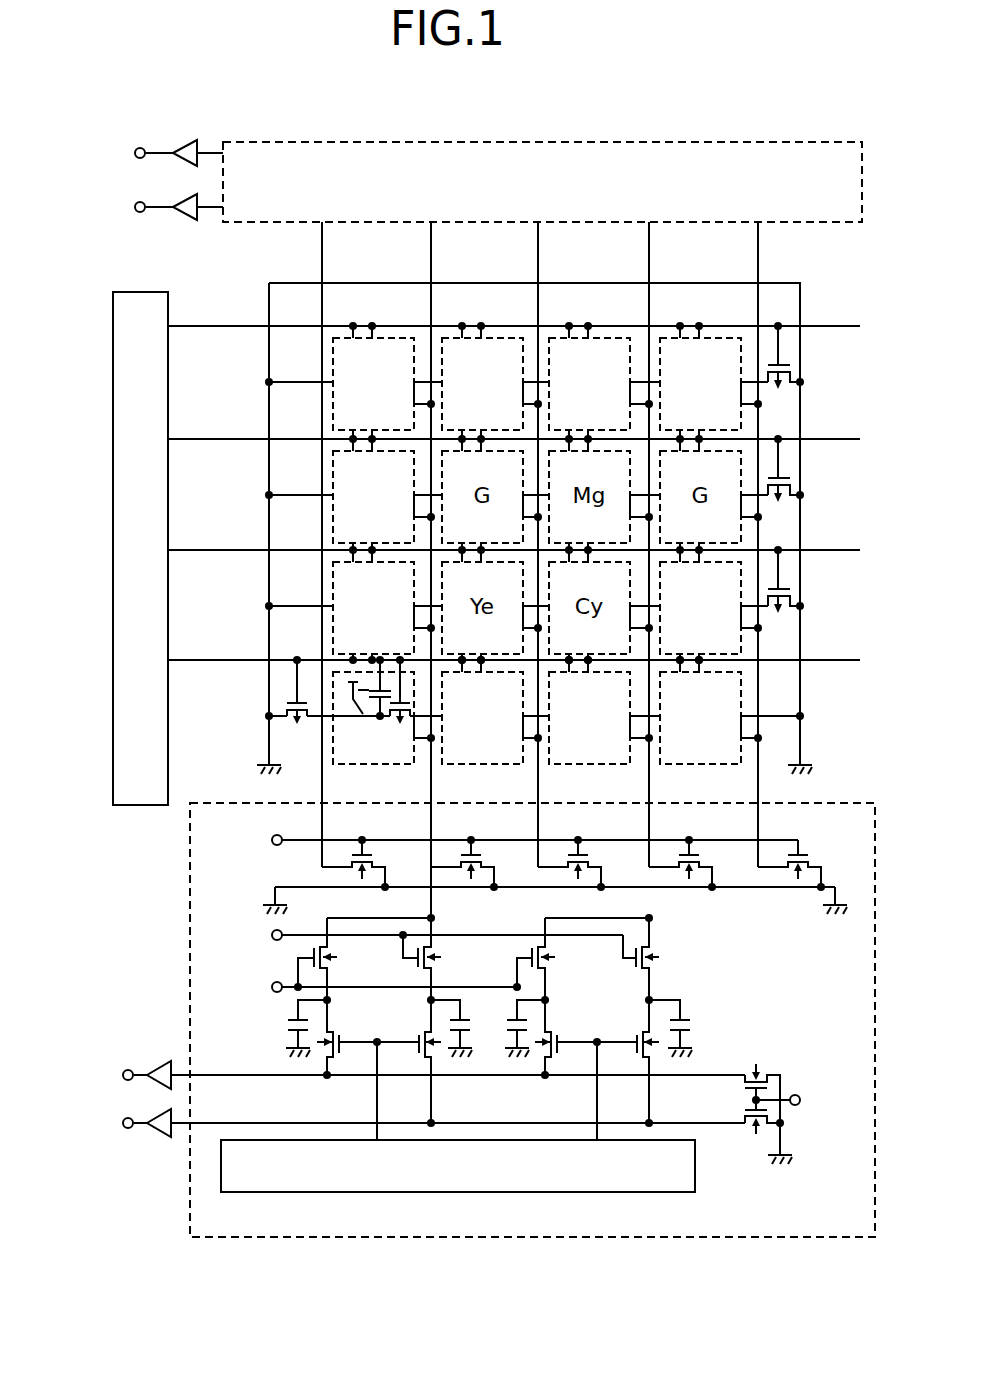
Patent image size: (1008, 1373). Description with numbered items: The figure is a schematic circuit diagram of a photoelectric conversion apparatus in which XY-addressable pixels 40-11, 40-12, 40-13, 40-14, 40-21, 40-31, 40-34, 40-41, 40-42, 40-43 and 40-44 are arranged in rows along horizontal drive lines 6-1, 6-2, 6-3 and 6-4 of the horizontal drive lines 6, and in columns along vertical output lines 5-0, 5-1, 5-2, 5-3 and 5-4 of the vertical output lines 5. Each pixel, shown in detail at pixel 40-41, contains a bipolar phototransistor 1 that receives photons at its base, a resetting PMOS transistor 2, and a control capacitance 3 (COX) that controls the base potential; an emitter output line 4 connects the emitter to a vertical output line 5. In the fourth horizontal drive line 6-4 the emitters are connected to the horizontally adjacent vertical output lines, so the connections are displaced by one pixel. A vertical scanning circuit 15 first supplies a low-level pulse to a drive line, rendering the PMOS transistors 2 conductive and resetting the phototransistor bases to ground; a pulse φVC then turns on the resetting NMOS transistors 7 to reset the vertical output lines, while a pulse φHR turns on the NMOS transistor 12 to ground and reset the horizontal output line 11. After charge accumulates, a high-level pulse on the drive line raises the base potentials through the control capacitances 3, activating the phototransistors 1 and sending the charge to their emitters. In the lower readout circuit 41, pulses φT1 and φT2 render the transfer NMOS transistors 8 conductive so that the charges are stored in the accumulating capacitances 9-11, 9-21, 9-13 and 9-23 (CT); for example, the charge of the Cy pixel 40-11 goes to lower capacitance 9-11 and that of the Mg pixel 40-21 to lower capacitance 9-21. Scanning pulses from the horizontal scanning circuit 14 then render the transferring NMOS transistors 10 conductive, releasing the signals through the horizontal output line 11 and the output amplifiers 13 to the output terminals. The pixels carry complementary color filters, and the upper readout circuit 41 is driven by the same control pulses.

The bipolar phototransistor 1 is at (356, 723).
The resetting PMOS transistor 2 is at (287, 713).
The control capacitance 3 is at (368, 687).
The emitter output line 4 is at (362, 760).
The vertical output line 5 is at (438, 822).
The vertical output line 5-0 is at (324, 263).
The vertical output line 5-1 is at (433, 263).
The vertical output line 5-2 is at (540, 263).
The vertical output line 5-3 is at (651, 263).
The vertical output line 5-4 is at (760, 263).
The horizontal drive line 6 is at (826, 552).
The horizontal drive line 6-1 is at (192, 326).
The horizontal drive line 6-2 is at (192, 439).
The horizontal drive line 6-3 is at (192, 550).
The horizontal drive line 6-4 is at (192, 660).
The resetting NMOS transistor 7 is at (380, 859).
The transfer NMOS transistor 8 is at (655, 947).
The accumulating capacitance 9-11 is at (286, 1024).
The accumulating capacitance 9-21 is at (448, 1025).
The accumulating capacitance 9-13 is at (527, 1026).
The accumulating capacitance 9-23 is at (692, 1018).
The transferring NMOS transistor 10 is at (643, 1055).
The horizontal output line 11 is at (705, 1075).
The NMOS transistor 12 is at (767, 1065).
The output amplifier 13 is at (184, 222).
The horizontal scanning circuit 14 is at (700, 1170).
The vertical scanning circuit 15 is at (145, 806).
The pixel 40-11 is at (353, 336).
The pixel 40-12 is at (462, 336).
The pixel 40-13 is at (569, 336).
The pixel 40-14 is at (680, 336).
The pixel 40-21 is at (333, 470).
The pixel 40-31 is at (333, 582).
The pixel 40-34 is at (744, 640).
The pixel 40-41 is at (355, 736).
The pixel 40-42 is at (455, 769).
The pixel 40-43 is at (565, 769).
The pixel 40-44 is at (675, 769).
The readout circuit 41 is at (241, 224).